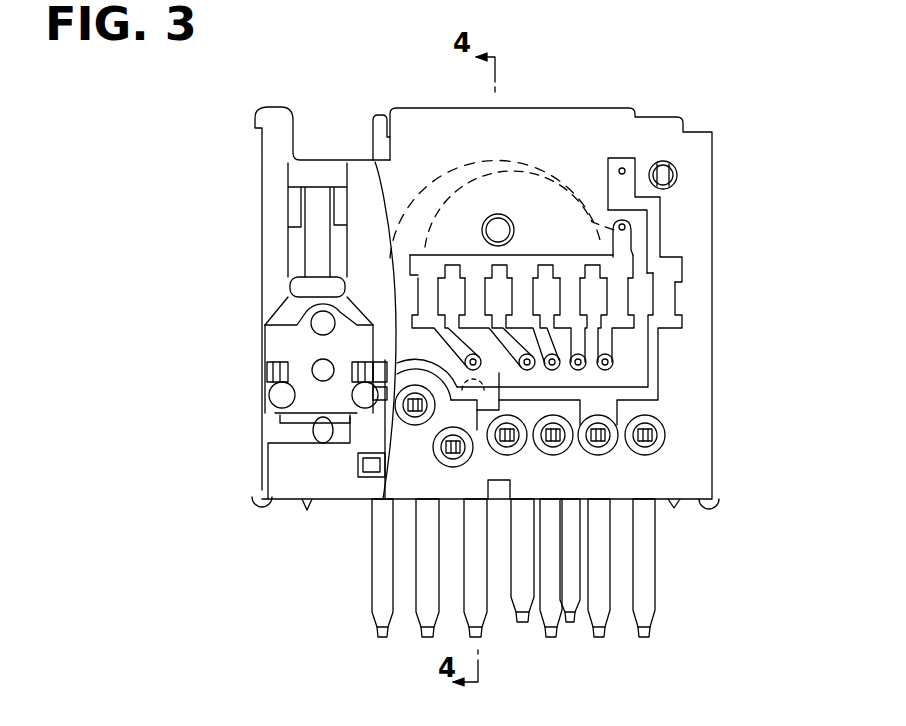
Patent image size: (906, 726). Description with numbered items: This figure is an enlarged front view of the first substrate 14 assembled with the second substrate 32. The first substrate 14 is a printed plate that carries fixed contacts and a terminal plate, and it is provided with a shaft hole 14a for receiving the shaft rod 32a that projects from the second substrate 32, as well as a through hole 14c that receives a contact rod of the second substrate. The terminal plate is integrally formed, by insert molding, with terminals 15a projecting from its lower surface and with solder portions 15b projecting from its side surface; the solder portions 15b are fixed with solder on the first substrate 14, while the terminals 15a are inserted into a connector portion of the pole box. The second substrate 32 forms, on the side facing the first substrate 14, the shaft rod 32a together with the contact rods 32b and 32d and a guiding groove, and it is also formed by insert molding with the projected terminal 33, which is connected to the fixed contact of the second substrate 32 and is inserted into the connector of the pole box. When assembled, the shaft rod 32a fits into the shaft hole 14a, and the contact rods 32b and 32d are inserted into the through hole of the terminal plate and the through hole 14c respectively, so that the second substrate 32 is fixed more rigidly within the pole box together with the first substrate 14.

The first substrate 14 is at (378, 257).
The shaft hole 14a is at (484, 219).
The through hole 14c is at (682, 181).
The terminals 15a is at (652, 630).
The solder portions 15b is at (557, 455).
The second substrate 32 is at (258, 204).
The shaft rod 32a is at (510, 216).
The contact rod 32b is at (470, 398).
The contact rod 32d is at (672, 167).
The projected terminal 33 is at (570, 624).